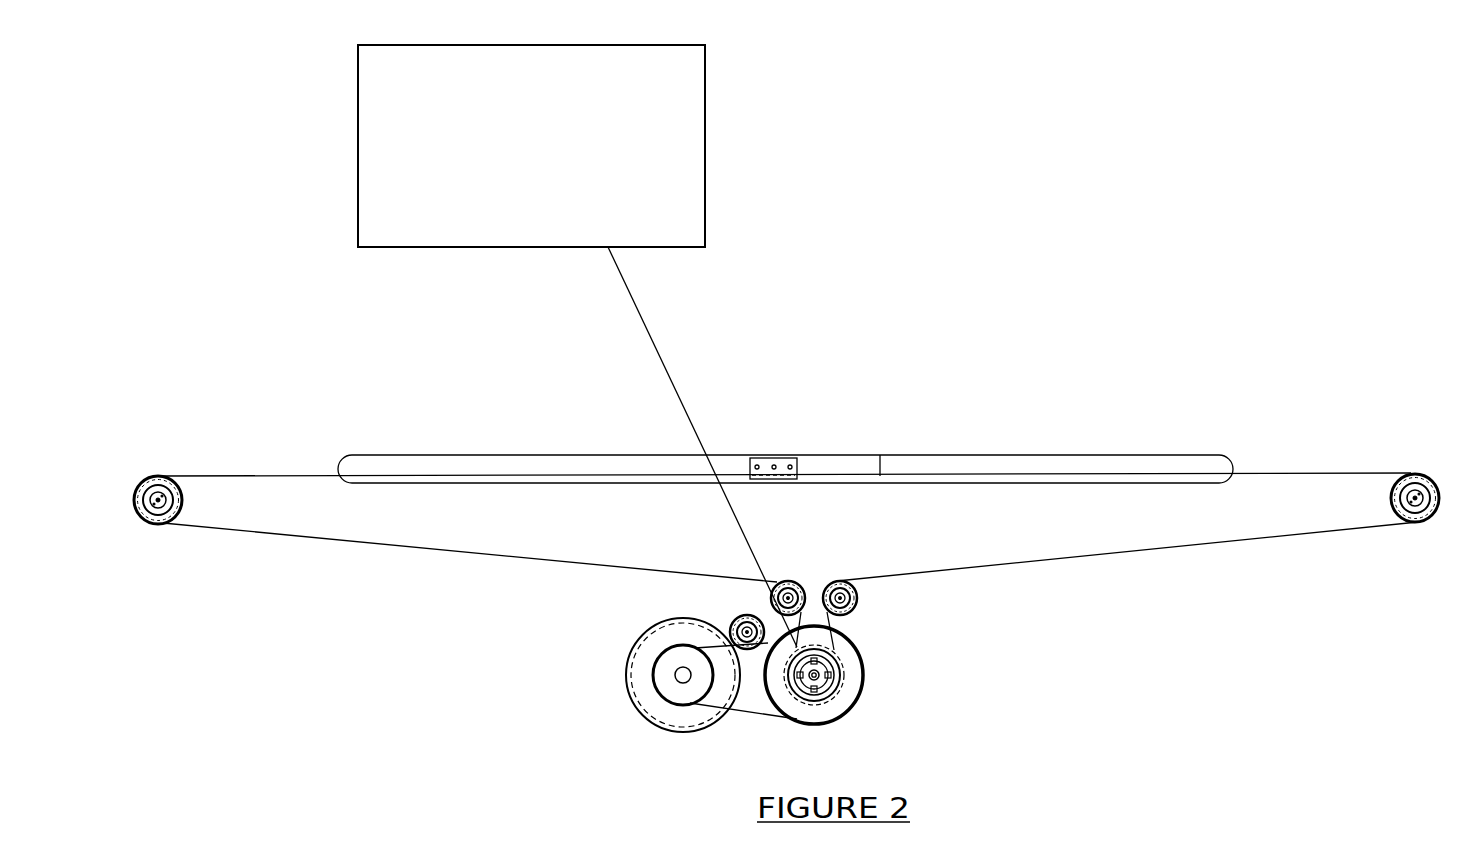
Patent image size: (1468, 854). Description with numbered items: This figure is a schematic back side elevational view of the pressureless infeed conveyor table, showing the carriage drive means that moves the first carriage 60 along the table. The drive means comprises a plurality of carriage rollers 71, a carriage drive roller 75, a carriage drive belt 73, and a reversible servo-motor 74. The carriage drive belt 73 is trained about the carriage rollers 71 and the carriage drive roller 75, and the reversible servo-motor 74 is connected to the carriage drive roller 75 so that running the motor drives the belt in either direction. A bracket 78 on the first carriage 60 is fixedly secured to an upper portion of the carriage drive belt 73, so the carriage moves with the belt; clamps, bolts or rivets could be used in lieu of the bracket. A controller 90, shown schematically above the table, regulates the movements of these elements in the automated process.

The controller 90 is at (548, 155).
The first carriage 60 is at (785, 431).
The bracket 78 is at (742, 424).
The carriage drive belt 73 is at (790, 561).
The carriage rollers 71 is at (786, 532).
The carriage drive roller 75 is at (711, 692).
The reversible servo-motor 74 is at (872, 686).